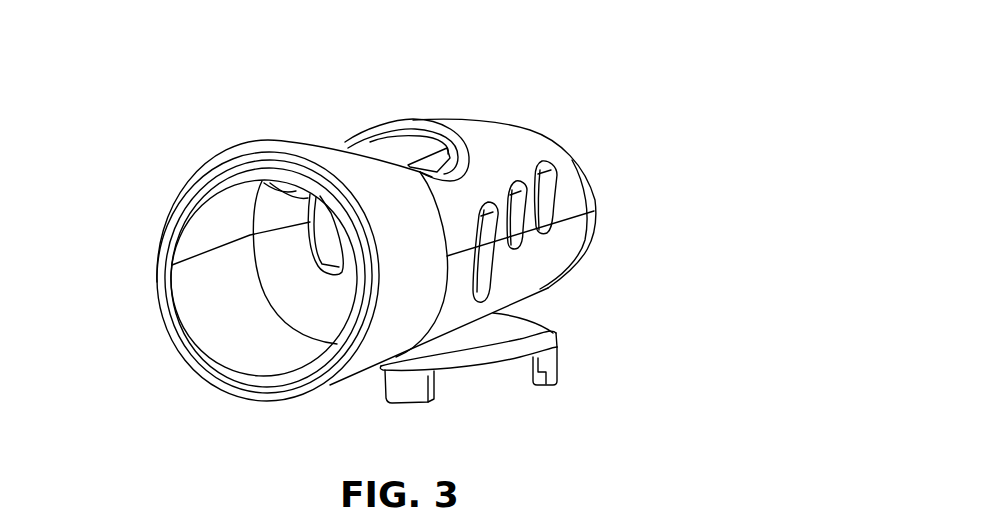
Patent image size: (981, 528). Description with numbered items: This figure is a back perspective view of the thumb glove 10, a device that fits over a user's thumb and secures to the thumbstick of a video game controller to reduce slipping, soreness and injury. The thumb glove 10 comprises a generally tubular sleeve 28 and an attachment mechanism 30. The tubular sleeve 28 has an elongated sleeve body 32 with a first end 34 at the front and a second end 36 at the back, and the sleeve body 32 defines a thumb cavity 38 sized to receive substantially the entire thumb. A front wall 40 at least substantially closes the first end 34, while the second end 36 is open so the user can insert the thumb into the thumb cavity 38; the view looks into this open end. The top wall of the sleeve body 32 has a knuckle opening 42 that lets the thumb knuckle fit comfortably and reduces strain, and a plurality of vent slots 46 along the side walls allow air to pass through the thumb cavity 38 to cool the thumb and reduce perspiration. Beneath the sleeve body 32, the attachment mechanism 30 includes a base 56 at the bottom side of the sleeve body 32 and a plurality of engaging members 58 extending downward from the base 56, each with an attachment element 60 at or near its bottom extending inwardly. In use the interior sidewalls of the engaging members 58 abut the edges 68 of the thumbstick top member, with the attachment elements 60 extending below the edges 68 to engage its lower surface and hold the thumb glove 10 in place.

The thumb glove 10 is at (416, 243).
The tubular sleeve 28 is at (271, 227).
The attachment mechanism 30 is at (509, 368).
The sleeve body 32 is at (518, 211).
The first end 34 is at (541, 118).
The second end 36 is at (167, 190).
The thumb cavity 38 is at (245, 303).
The front wall 40 is at (593, 213).
The knuckle opening 42 is at (392, 152).
The vent slots 46 is at (520, 235).
The base 56 is at (521, 329).
The engaging members 58 is at (400, 386).
The attachment element 60 is at (544, 374).
The edges 68 is at (480, 365).